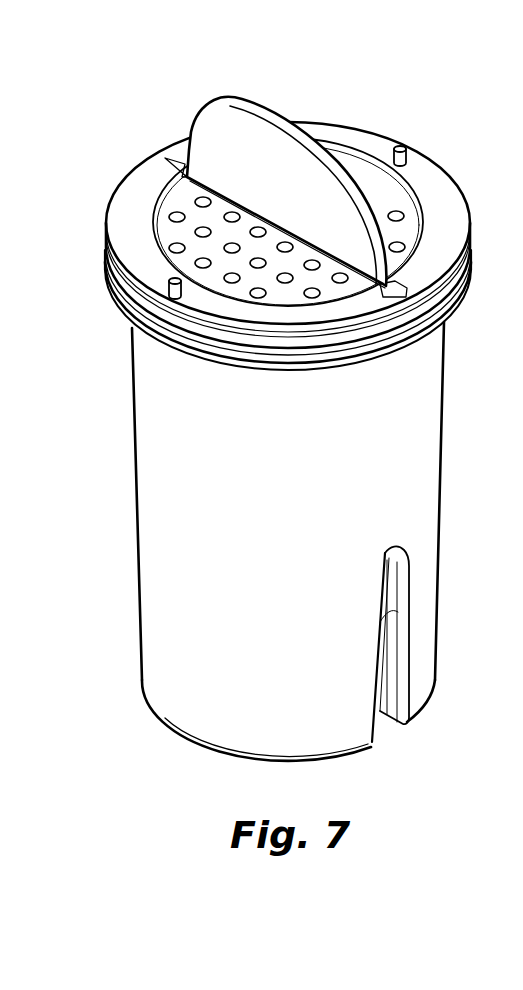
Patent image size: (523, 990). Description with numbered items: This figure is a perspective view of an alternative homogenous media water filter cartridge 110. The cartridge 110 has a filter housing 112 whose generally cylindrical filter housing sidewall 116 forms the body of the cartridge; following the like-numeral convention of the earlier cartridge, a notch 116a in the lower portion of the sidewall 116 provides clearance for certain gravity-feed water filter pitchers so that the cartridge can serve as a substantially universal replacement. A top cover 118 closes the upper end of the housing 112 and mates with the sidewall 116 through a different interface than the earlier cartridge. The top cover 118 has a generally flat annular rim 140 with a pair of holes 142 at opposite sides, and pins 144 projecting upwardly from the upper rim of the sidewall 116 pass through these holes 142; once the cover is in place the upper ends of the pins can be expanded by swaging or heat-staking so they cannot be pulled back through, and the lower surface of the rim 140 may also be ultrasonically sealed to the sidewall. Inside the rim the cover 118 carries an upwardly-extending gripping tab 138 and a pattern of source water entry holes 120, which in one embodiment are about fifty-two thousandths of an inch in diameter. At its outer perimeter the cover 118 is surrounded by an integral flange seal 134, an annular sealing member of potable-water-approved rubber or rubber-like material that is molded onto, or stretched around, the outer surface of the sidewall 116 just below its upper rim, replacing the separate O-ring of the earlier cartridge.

The homogenous media cartridge 110 is at (280, 414).
The filter housing 112 is at (248, 560).
The filter housing sidewall 116 is at (143, 440).
The notch in side wall 116a is at (388, 733).
The top cover 118 is at (451, 191).
The source water entry holes 120 is at (288, 244).
The integral flange seal 134 is at (101, 298).
The gripping tab 138 is at (256, 100).
The annular rim 140 is at (133, 190).
The holes 142 is at (391, 152).
The pins 144 is at (400, 147).